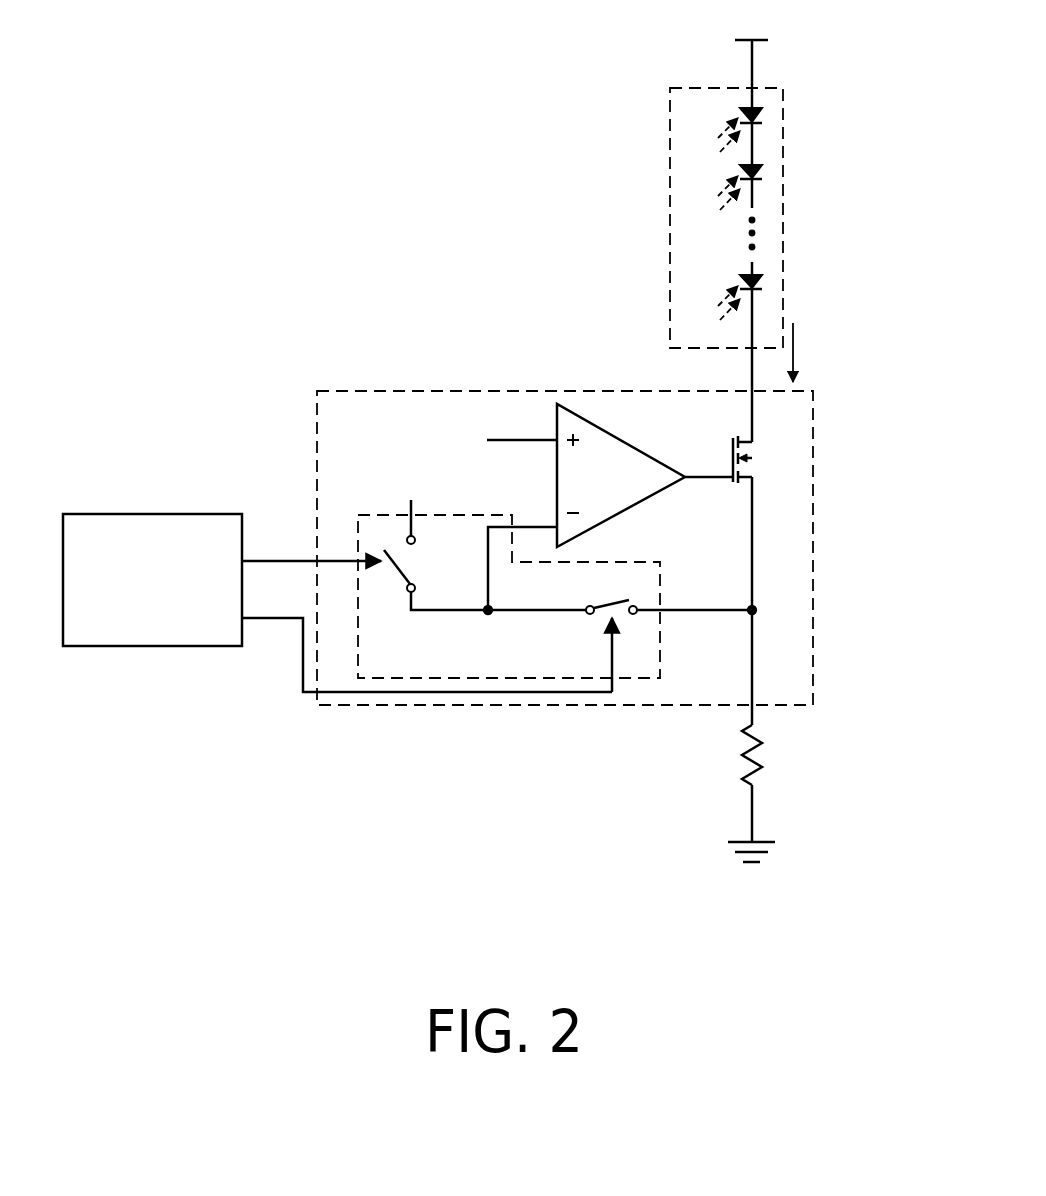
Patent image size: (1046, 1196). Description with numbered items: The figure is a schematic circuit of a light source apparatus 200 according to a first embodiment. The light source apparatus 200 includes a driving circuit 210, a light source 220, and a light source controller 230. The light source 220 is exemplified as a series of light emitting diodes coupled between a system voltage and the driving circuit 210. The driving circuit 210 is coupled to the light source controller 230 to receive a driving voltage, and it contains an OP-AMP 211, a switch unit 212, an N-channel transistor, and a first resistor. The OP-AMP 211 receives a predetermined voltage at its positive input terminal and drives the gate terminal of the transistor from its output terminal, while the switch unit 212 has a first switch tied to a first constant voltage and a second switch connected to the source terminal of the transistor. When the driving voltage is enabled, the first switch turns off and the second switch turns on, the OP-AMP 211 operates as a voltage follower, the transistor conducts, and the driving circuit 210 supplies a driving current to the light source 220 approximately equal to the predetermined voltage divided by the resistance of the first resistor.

The light source apparatus 200 is at (894, 913).
The driving circuit 210 is at (813, 503).
The OP-AMP 211 is at (633, 443).
The switch unit 212 is at (558, 680).
The light source 220 is at (783, 240).
The light source controller 230 is at (183, 646).